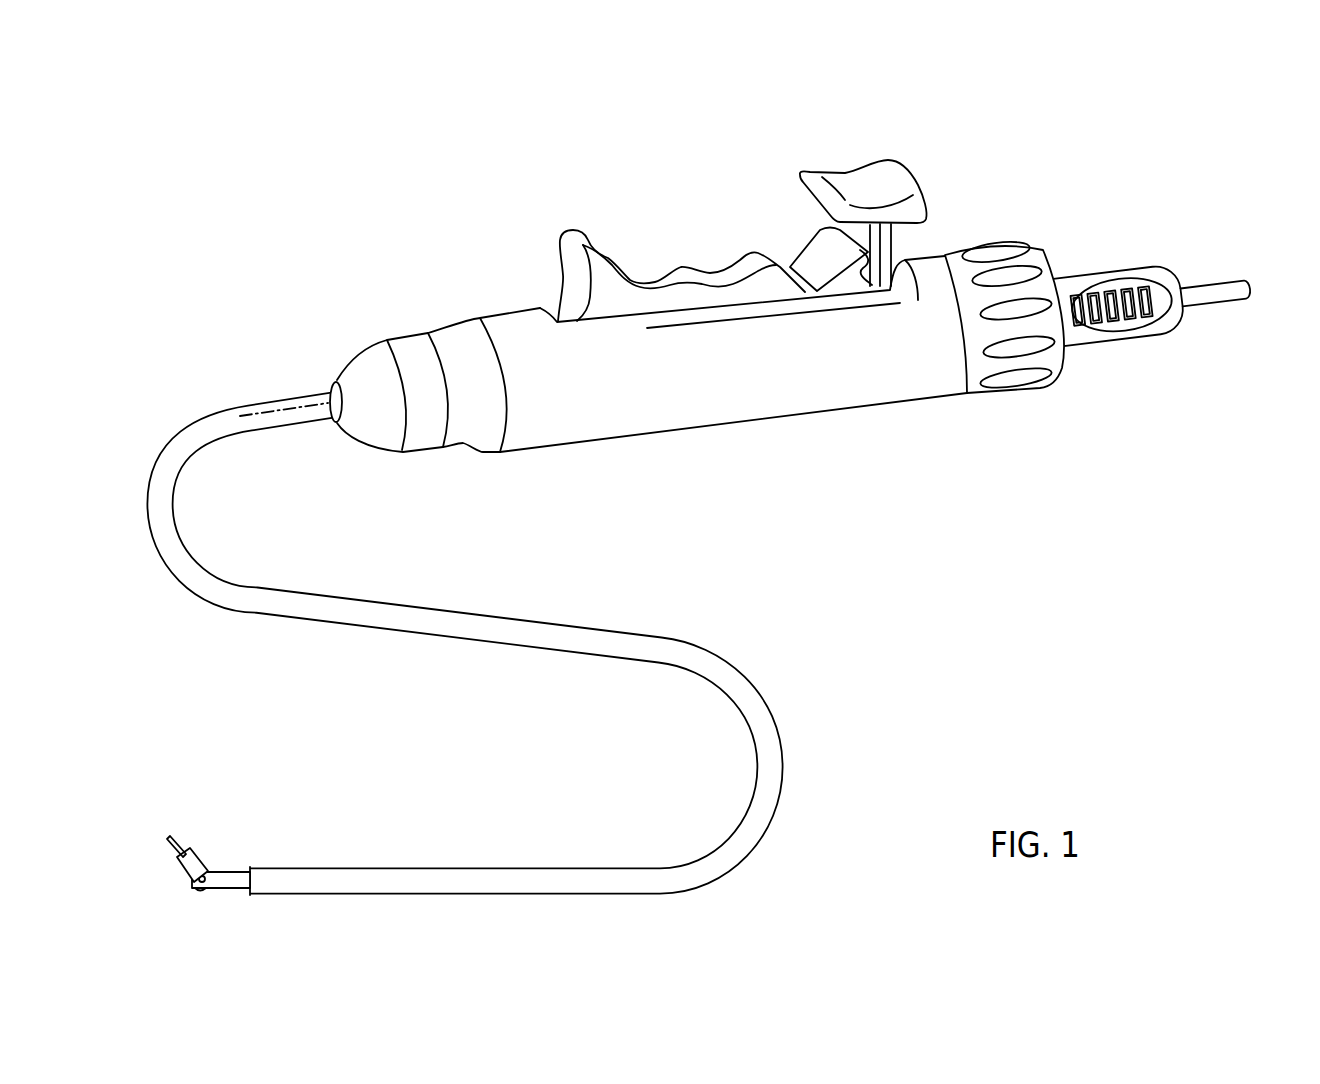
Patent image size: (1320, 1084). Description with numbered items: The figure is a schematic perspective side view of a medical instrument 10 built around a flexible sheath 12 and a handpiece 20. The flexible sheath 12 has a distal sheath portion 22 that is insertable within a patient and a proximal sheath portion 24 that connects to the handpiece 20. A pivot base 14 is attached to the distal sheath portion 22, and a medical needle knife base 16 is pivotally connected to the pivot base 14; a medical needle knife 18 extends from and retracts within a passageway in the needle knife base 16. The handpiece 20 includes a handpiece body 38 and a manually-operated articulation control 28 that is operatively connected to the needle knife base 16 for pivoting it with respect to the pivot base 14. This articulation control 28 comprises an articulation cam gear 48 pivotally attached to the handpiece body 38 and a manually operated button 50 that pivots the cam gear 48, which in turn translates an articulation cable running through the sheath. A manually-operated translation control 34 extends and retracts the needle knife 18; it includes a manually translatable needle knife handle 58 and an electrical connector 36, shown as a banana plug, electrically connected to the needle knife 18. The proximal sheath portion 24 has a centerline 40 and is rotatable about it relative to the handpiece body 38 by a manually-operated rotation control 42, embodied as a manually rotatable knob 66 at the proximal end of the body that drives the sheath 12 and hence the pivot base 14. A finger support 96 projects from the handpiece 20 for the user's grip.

The medical instrument 10 is at (398, 226).
The flexible sheath 12 is at (542, 606).
The pivot base 14 is at (227, 868).
The medical needle knife base 16 is at (180, 867).
The medical needle knife 18 is at (182, 848).
The handpiece 20 is at (708, 314).
The distal sheath portion 22 is at (300, 867).
The proximal sheath portion 24 is at (305, 390).
The manually-operated articulation control 28 is at (821, 202).
The manually-operated translation control 34 is at (1149, 259).
The electrical connector 36 is at (1208, 283).
The handpiece body 38 is at (877, 395).
The centerline 40 is at (300, 425).
The manually-operated rotation control 42 is at (1012, 364).
The articulation cam gear 48 is at (822, 246).
The manually operated button 50 is at (853, 168).
The needle knife handle 58 is at (1073, 277).
The manually rotatable knob 66 is at (1057, 388).
The finger support 96 is at (573, 290).